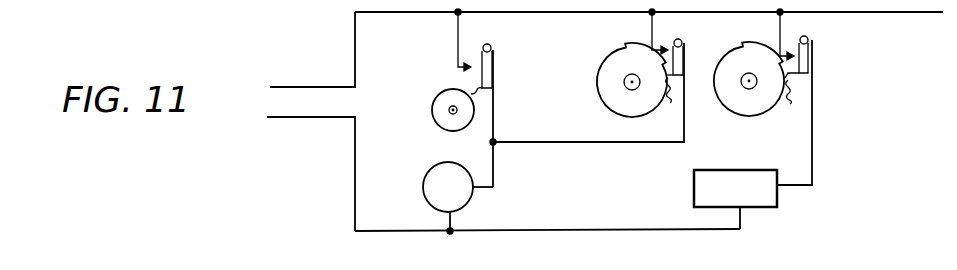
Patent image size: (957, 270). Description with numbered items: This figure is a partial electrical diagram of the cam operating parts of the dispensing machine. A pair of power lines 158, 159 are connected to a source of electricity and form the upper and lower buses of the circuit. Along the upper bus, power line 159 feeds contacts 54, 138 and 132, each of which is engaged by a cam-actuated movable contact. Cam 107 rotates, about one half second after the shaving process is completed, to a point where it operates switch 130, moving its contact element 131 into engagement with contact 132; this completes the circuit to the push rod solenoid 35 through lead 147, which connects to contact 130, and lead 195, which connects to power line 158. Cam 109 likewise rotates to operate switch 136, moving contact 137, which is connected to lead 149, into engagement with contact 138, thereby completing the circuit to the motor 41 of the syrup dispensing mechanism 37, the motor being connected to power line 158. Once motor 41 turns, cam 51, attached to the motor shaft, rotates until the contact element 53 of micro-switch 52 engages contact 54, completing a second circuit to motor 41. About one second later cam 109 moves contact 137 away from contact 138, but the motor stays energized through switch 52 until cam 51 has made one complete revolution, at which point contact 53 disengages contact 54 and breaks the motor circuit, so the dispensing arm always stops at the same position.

The push rod solenoid 35 is at (770, 205).
The syrup dispensing mechanism 37 is at (338, 162).
The motor 41 is at (423, 184).
The cam 51 is at (442, 118).
The micro-switch 52 is at (492, 47).
The contact element 53 is at (488, 91).
The contact 54 is at (468, 64).
The cam 107 is at (738, 96).
The cam 109 is at (604, 100).
The switch 130 is at (808, 40).
The contact element 131 is at (788, 105).
The contact 132 is at (789, 52).
The switch 136 is at (684, 40).
The contact 137 is at (668, 92).
The contact 138 is at (660, 49).
The lead 147 is at (812, 157).
The lead 149 is at (684, 126).
The power line 158 is at (600, 230).
The power line 159 is at (457, 40).
The lead 195 is at (452, 225).